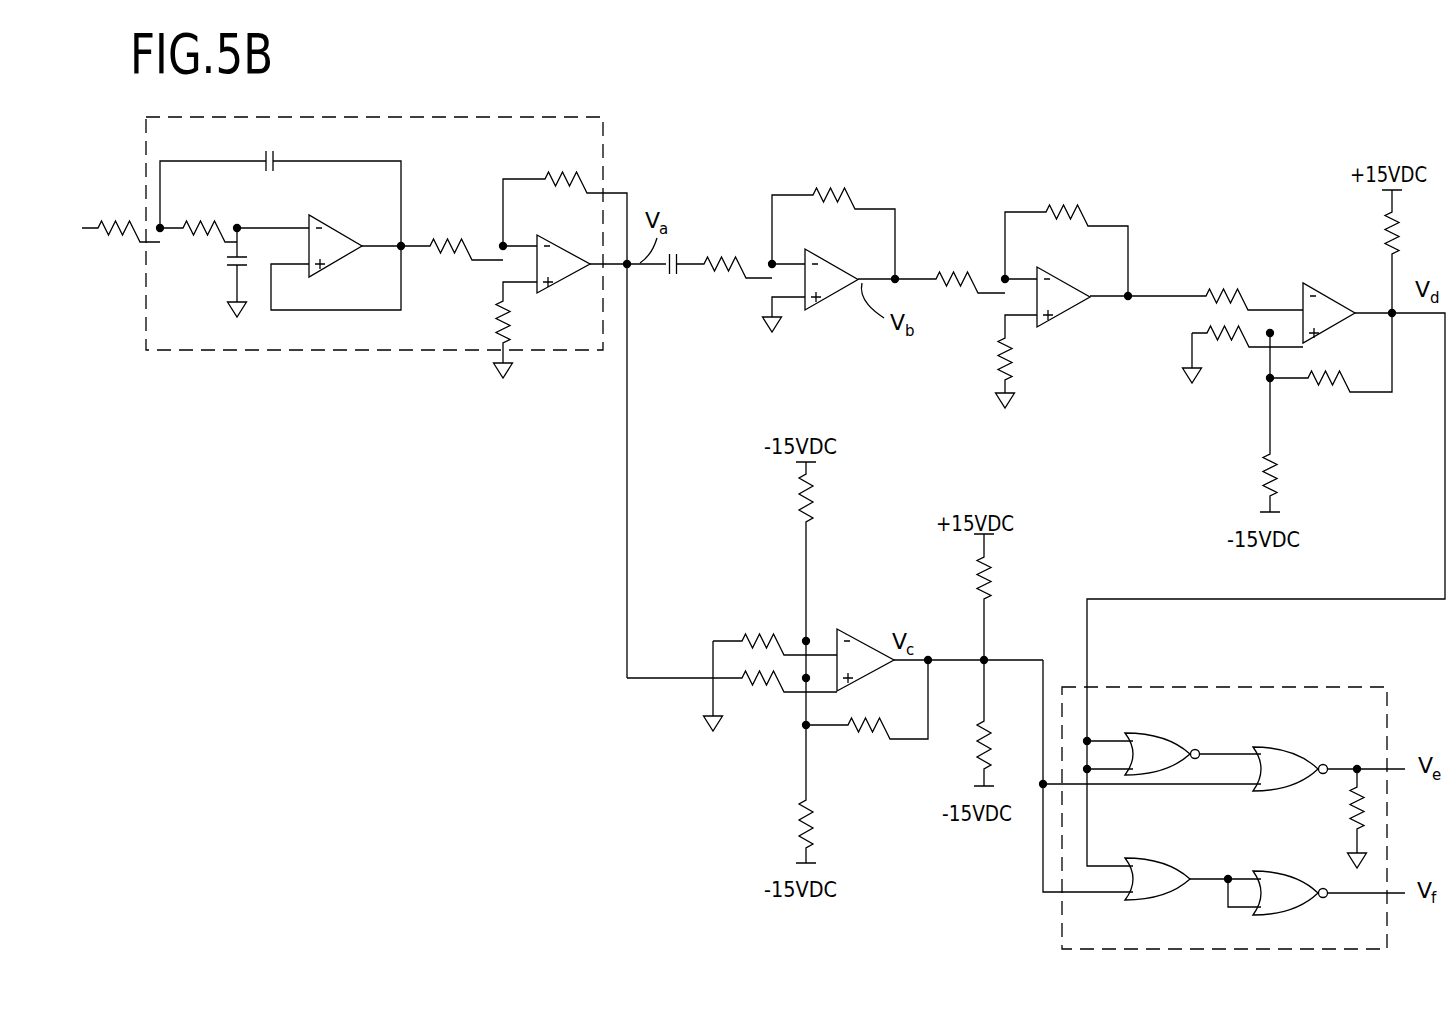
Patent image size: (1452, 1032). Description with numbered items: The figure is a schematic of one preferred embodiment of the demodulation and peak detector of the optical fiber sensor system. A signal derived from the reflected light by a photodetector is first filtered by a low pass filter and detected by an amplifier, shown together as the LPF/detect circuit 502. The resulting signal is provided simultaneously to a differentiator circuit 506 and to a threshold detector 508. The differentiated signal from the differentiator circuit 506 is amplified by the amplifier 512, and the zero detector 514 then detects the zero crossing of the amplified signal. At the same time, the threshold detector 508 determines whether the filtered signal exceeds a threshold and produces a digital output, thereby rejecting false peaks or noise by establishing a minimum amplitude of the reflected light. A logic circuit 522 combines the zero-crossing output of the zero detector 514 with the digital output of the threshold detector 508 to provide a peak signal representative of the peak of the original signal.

The LPF/detect circuit 502 is at (247, 352).
The differentiator circuit 506 is at (818, 303).
The threshold detector 508 is at (858, 629).
The amplifier 512 is at (1062, 316).
The zero detector 514 is at (1337, 297).
The logic circuit 522 is at (1203, 687).